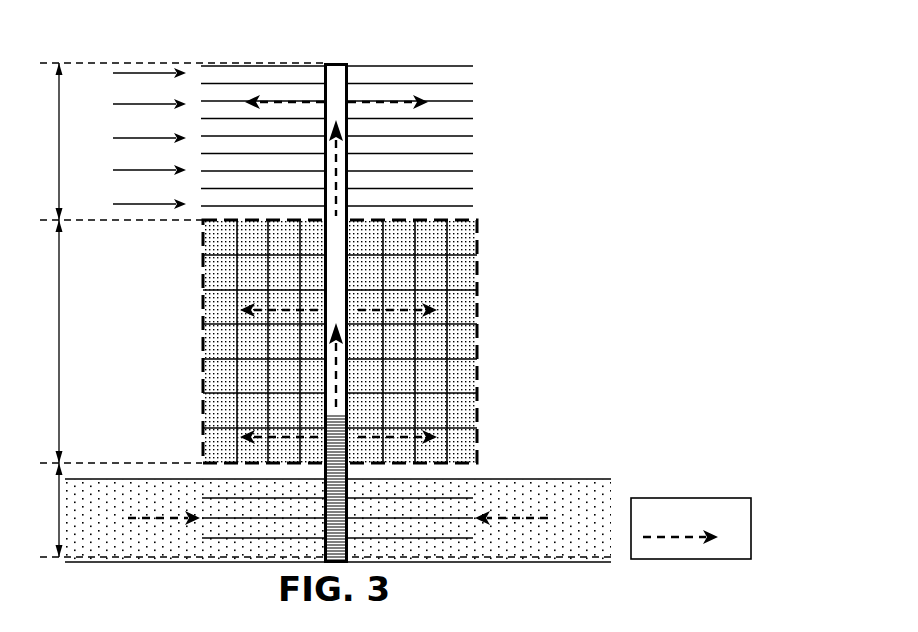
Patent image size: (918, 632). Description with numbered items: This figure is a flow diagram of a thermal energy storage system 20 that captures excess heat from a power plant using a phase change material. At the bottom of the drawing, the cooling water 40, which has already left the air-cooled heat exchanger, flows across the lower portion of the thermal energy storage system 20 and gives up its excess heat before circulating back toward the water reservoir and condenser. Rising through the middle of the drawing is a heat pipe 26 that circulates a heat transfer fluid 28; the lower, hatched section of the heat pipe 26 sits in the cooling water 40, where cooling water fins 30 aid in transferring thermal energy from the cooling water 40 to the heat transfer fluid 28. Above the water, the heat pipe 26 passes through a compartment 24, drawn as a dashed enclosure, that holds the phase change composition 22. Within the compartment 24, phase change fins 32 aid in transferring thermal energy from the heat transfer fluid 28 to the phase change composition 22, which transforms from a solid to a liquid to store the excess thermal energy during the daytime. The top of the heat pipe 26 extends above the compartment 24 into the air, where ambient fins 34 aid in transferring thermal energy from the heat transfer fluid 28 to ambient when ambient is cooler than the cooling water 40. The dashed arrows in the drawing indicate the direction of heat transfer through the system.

The thermal energy storage system 20 is at (617, 68).
The phase change composition 22 is at (218, 345).
The compartment 24 is at (477, 382).
The heat pipe 26 is at (347, 187).
The heat transfer fluid 28 is at (348, 517).
The cooling water fins 30 is at (412, 538).
The phase change fins 32 is at (447, 315).
The ambient fins 34 is at (440, 183).
The cooling water 40 is at (555, 508).